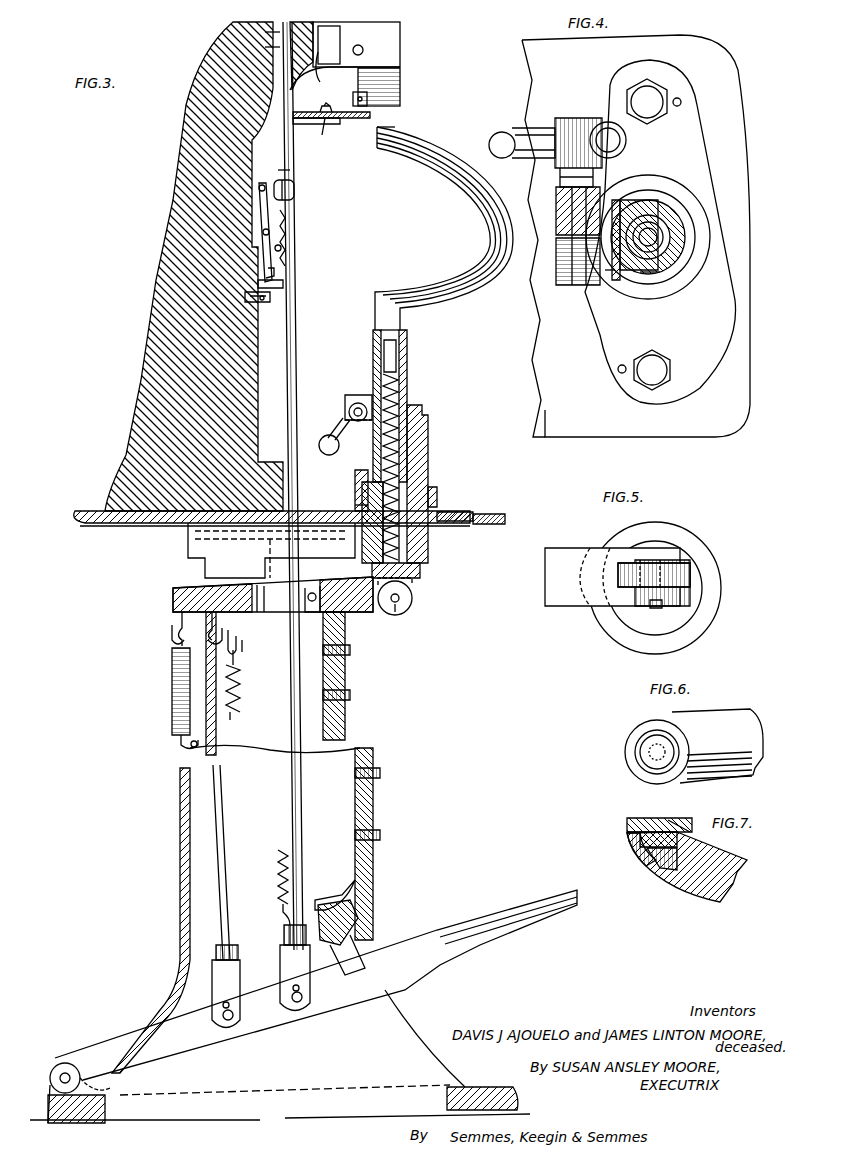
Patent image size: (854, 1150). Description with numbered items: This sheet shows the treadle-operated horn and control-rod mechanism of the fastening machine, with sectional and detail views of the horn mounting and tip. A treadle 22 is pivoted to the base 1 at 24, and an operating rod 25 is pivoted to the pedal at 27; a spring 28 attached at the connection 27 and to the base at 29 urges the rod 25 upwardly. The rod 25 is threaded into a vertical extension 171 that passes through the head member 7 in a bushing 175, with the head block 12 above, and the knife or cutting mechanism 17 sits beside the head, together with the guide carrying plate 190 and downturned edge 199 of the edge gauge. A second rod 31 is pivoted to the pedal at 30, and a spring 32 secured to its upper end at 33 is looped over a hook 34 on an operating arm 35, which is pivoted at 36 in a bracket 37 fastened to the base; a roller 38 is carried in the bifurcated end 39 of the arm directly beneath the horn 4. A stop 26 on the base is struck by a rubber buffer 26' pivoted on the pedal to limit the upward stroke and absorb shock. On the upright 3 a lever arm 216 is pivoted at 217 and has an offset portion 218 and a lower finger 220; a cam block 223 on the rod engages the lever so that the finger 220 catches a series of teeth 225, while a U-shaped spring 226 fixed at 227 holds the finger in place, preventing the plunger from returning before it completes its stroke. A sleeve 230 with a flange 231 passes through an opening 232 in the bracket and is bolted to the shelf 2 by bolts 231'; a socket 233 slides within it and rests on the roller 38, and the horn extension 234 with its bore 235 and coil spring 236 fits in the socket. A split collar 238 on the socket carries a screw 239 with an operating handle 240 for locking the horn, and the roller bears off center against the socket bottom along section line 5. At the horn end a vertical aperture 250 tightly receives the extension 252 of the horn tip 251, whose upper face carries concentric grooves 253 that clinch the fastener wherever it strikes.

In FIG. 3, the base 1 is at (177, 834).
In FIG. 3, the shelf 2 is at (486, 525).
In FIG. 3, the upright 3 is at (178, 258).
In FIG. 4, the upright 3 is at (540, 62).
In FIG. 3, the horn 4 is at (465, 230).
In FIG. 6, the horn 4 is at (745, 728).
In FIG. 7, the horn 4 is at (732, 888).
In FIG. 3, the section line 5 is at (453, 480).
In FIG. 3, the head member 7 is at (321, 73).
In FIG. 3, the head block 12 is at (406, 41).
In FIG. 3, the cutting mechanism 17 is at (406, 83).
In FIG. 3, the treadle 22 is at (520, 905).
In FIG. 3, the pedal pivot 24 is at (62, 1072).
In FIG. 3, the operating rod 25 is at (292, 156).
In FIG. 3, the stop 26 is at (364, 844).
In FIG. 3, the buffer 26' is at (367, 937).
In FIG. 3, the rod connection 27 is at (296, 1008).
In FIG. 3, the spring 28 is at (240, 680).
In FIG. 3, the spring attachment 29 is at (238, 645).
In FIG. 3, the rod pivot 30 is at (226, 1020).
In FIG. 3, the rod 31 is at (200, 757).
In FIG. 3, the spring 32 is at (172, 692).
In FIG. 3, the spring connection 33 is at (186, 748).
In FIG. 3, the hook 34 is at (172, 634).
In FIG. 3, the operating arm 35 is at (195, 596).
In FIG. 5, the operating arm 35 is at (547, 588).
In FIG. 3, the arm pivot 36 is at (312, 593).
In FIG. 3, the bracket 37 is at (347, 685).
In FIG. 3, the roller 38 is at (414, 600).
In FIG. 5, the roller 38 is at (692, 570).
In FIG. 3, the bifurcated end 39 is at (394, 606).
In FIG. 5, the bifurcated end 39 is at (656, 606).
In FIG. 3, the vertical extension 171 is at (268, 34).
In FIG. 3, the bushing 175 is at (268, 47).
In FIG. 3, the guide carrying plate 190 is at (331, 135).
In FIG. 3, the downturned edge 199 is at (372, 114).
In FIG. 3, the lever arm 216 is at (270, 215).
In FIG. 3, the lever pivot 217 is at (270, 234).
In FIG. 3, the offset portion 218 is at (292, 176).
In FIG. 3, the finger 220 is at (276, 270).
In FIG. 3, the cam block 223 is at (296, 188).
In FIG. 3, the teeth 225 is at (282, 249).
In FIG. 3, the U-shaped spring 226 is at (285, 284).
In FIG. 3, the spring attachment 227 is at (272, 298).
In FIG. 3, the sleeve 230 is at (430, 448).
In FIG. 4, the sleeve 230 is at (690, 190).
In FIG. 5, the sleeve 230 is at (712, 615).
In FIG. 3, the flange 231 is at (460, 493).
In FIG. 4, the bolts 231' is at (674, 223).
In FIG. 3, the opening 232 is at (450, 510).
In FIG. 3, the socket 233 is at (418, 576).
In FIG. 4, the socket 233 is at (690, 185).
In FIG. 5, the socket 233 is at (692, 585).
In FIG. 3, the extension 234 is at (408, 372).
In FIG. 4, the extension 234 is at (652, 283).
In FIG. 3, the bore 235 is at (392, 352).
In FIG. 4, the bore 235 is at (615, 285).
In FIG. 3, the coil spring 236 is at (383, 374).
In FIG. 4, the coil spring 236 is at (665, 245).
In FIG. 3, the split collar 238 is at (371, 410).
In FIG. 4, the split collar 238 is at (630, 195).
In FIG. 3, the screw 239 is at (358, 412).
In FIG. 4, the screw 239 is at (585, 285).
In FIG. 3, the operating handle 240 is at (337, 448).
In FIG. 4, the operating handle 240 is at (500, 133).
In FIG. 7, the vertical aperture 250 is at (660, 870).
In FIG. 3, the horn tip 251 is at (395, 128).
In FIG. 6, the horn tip 251 is at (640, 751).
In FIG. 7, the horn tip 251 is at (625, 825).
In FIG. 7, the tip extension 252 is at (632, 846).
In FIG. 6, the concentric grooves 253 is at (645, 738).
In FIG. 7, the concentric grooves 253 is at (685, 822).